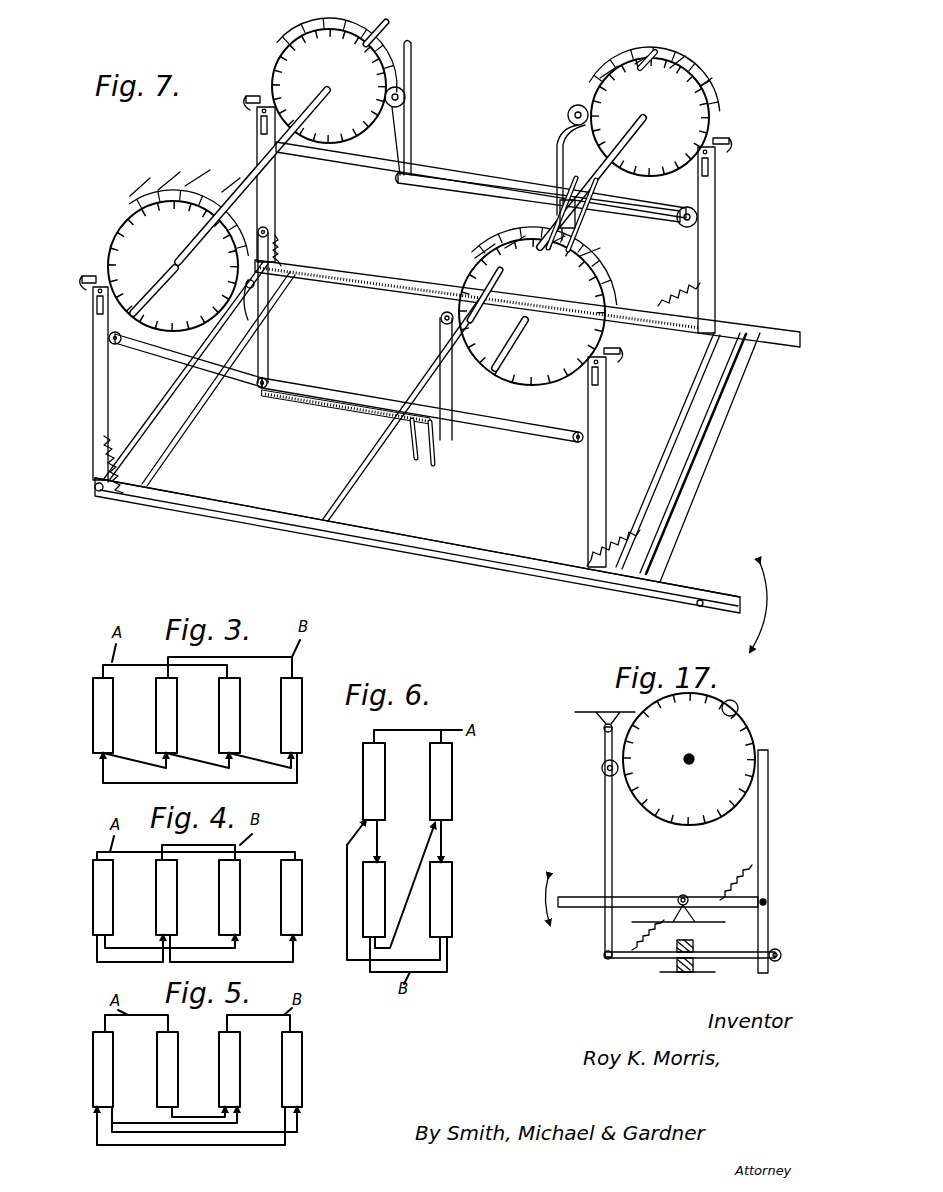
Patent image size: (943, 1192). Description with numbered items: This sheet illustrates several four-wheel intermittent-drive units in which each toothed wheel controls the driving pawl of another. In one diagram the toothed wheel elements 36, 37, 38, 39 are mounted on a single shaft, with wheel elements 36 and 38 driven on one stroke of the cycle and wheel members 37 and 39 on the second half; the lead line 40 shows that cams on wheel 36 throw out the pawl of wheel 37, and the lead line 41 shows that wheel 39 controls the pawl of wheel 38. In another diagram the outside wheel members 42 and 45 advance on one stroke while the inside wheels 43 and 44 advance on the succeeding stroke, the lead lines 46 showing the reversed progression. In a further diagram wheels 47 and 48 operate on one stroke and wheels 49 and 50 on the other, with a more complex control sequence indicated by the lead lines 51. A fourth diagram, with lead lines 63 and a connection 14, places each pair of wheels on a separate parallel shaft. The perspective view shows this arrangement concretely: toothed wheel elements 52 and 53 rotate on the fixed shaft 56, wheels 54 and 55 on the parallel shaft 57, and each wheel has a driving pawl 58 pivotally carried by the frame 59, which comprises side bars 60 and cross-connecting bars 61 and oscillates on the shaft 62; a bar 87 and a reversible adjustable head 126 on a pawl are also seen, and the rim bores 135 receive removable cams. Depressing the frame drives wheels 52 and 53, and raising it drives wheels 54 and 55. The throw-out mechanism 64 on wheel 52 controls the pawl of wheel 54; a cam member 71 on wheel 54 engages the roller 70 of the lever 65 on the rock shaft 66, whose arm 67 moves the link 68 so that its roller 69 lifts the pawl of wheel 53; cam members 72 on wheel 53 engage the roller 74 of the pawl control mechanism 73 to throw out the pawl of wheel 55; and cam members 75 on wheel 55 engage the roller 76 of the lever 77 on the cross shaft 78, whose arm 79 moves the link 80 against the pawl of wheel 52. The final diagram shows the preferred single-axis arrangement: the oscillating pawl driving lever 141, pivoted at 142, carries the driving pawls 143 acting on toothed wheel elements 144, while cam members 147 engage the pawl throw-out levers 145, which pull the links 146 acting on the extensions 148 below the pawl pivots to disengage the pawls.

In FIG. 6, the wire connection 14 is at (383, 880).
In FIG. 3, the toothed wheel element 36 is at (101, 716).
In FIG. 3, the toothed wheel element 37 is at (166, 713).
In FIG. 3, the toothed wheel element 38 is at (228, 713).
In FIG. 3, the toothed wheel element 39 is at (290, 710).
In FIG. 3, the lead line 40 is at (118, 764).
In FIG. 3, the lead line 41 is at (196, 778).
In FIG. 4, the outside wheel member 42 is at (100, 898).
In FIG. 4, the inside wheel 43 is at (166, 901).
In FIG. 4, the inside wheel 44 is at (228, 898).
In FIG. 4, the outside wheel member 45 is at (290, 897).
In FIG. 4, the lead lines 46 is at (200, 948).
In FIG. 5, the wheel 47 is at (101, 1073).
In FIG. 5, the wheel 48 is at (166, 1078).
In FIG. 5, the wheel 49 is at (226, 1073).
In FIG. 5, the wheel 50 is at (290, 1072).
In FIG. 5, the lead lines 51 is at (190, 1145).
In FIG. 7, the toothed wheel element 52 is at (132, 200).
In FIG. 6, the toothed wheel element 52 is at (376, 781).
In FIG. 7, the toothed wheel element 53 is at (300, 36).
In FIG. 6, the toothed wheel element 53 is at (442, 781).
In FIG. 7, the toothed wheel element 54 is at (536, 388).
In FIG. 7, the toothed wheel element 55 is at (705, 64).
In FIG. 6, the toothed wheel element 55 is at (445, 890).
In FIG. 7, the fixed shaft 56 is at (258, 170).
In FIG. 7, the parallel shaft 57 is at (592, 226).
In FIG. 7, the driving pawl 58 is at (93, 388).
In FIG. 7, the frame 59 is at (452, 542).
In FIG. 7, the side bars 60 is at (445, 552).
In FIG. 7, the cross-connecting bars 61 is at (712, 416).
In FIG. 7, the shaft 62 is at (357, 484).
In FIG. 6, the lead lines 63 is at (392, 938).
In FIG. 7, the pawl throw-out mechanism 64 is at (270, 303).
In FIG. 7, the lever 65 is at (440, 352).
In FIG. 7, the rock shaft 66 is at (436, 454).
In FIG. 7, the arm 67 is at (578, 176).
In FIG. 7, the link 68 is at (466, 166).
In FIG. 7, the roller 69 is at (276, 156).
In FIG. 7, the roller 70 is at (440, 316).
In FIG. 7, the cam member 71 is at (480, 266).
In FIG. 7, the cam members 72 is at (390, 40).
In FIG. 7, the pawl control mechanism 73 is at (412, 104).
In FIG. 7, the roller 74 is at (400, 94).
In FIG. 7, the cam members 75 is at (640, 64).
In FIG. 7, the roller 76 is at (576, 106).
In FIG. 7, the lever 77 is at (556, 137).
In FIG. 7, the cross shaft 78 is at (558, 222).
In FIG. 7, the arm 79 is at (412, 432).
In FIG. 7, the link 80 is at (310, 380).
In FIG. 7, the bar 87 is at (118, 344).
In FIG. 7, the adjustable head 126 is at (86, 292).
In FIG. 7, the radial bores 135 is at (188, 190).
In FIG. 17, the oscillating pawl driving lever 141 is at (646, 903).
In FIG. 17, the pivot 142 is at (698, 914).
In FIG. 17, the driving pawls 143 is at (773, 760).
In FIG. 17, the toothed wheel elements 144 is at (689, 759).
In FIG. 17, the pawl throw-out levers 145 is at (612, 843).
In FIG. 17, the links 146 is at (632, 960).
In FIG. 17, the cam members 147 is at (738, 708).
In FIG. 17, the extensions 148 is at (696, 936).